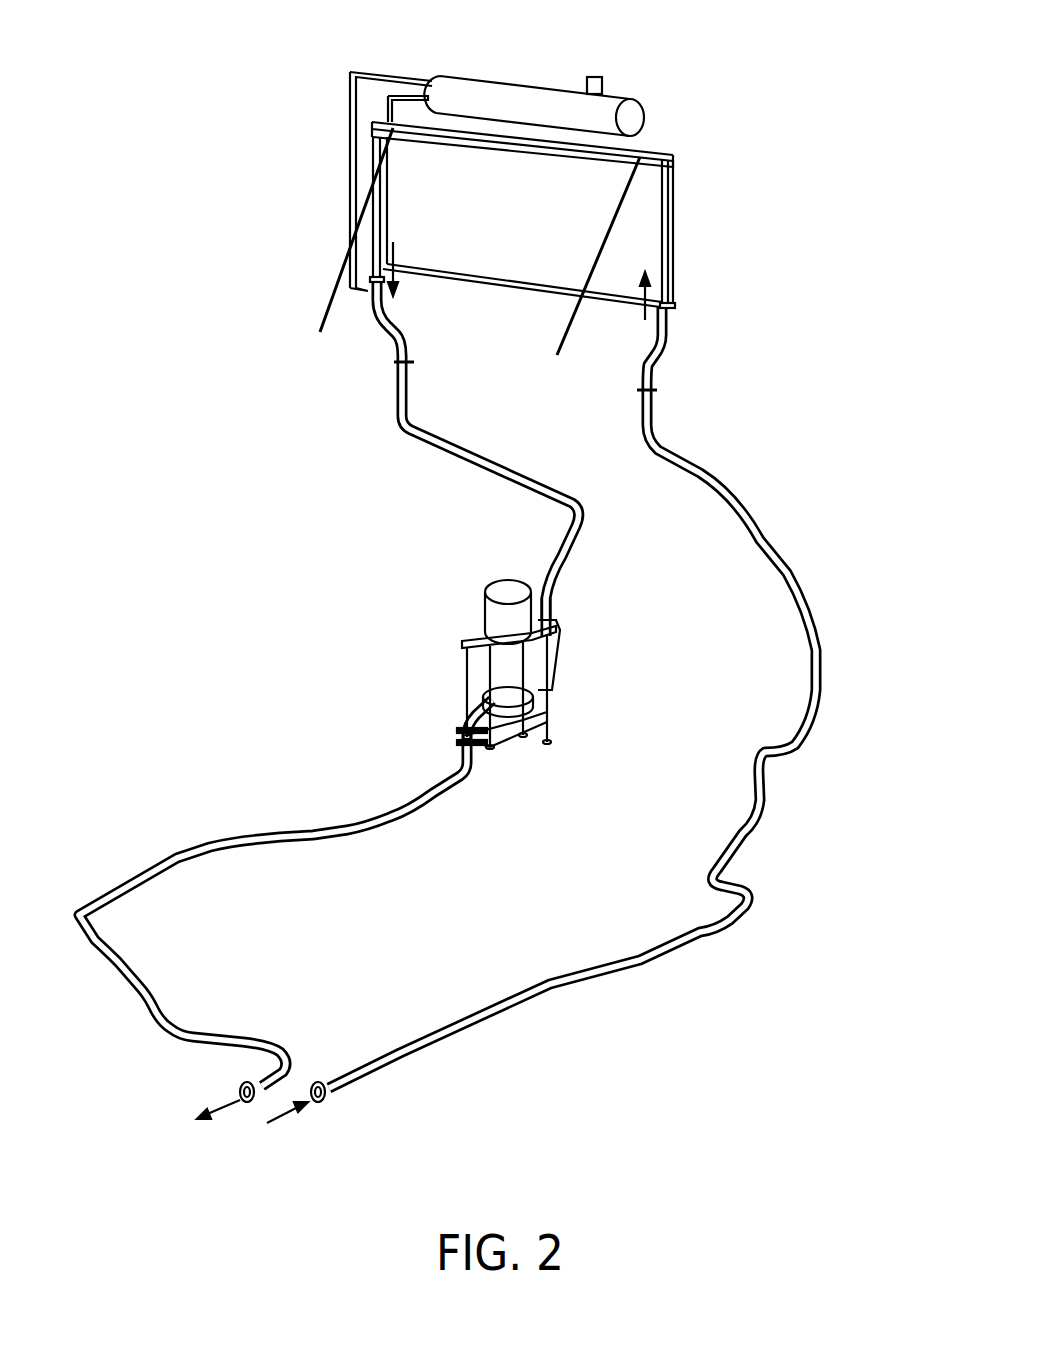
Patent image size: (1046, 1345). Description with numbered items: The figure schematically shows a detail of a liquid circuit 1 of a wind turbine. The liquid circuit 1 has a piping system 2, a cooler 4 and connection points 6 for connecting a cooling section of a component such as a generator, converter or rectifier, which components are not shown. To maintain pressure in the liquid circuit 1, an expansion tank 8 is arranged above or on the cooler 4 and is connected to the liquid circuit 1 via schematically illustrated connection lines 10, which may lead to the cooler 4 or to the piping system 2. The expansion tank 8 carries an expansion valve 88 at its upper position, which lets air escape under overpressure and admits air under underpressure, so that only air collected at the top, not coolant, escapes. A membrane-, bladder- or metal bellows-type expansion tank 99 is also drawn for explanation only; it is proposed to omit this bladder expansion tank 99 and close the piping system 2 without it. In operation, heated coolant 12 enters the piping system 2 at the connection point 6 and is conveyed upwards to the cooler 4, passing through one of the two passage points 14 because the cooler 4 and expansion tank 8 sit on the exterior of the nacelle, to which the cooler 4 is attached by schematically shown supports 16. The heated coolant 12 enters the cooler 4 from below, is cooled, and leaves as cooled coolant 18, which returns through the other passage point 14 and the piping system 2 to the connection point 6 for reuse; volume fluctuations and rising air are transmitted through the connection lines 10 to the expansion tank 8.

The liquid circuit 1 is at (614, 1012).
The piping system 2 is at (260, 832).
The cooler 4 is at (668, 215).
The connection points 6 is at (200, 1097).
The expansion tank 8 is at (533, 88).
The connection lines 10 is at (349, 101).
The heated coolant 12 is at (648, 296).
The passage points 14 is at (398, 362).
The supports 16 is at (326, 312).
The cooled coolant 18 is at (400, 258).
The expansion valve 88 is at (597, 76).
The bladder expansion tank 99 is at (452, 612).